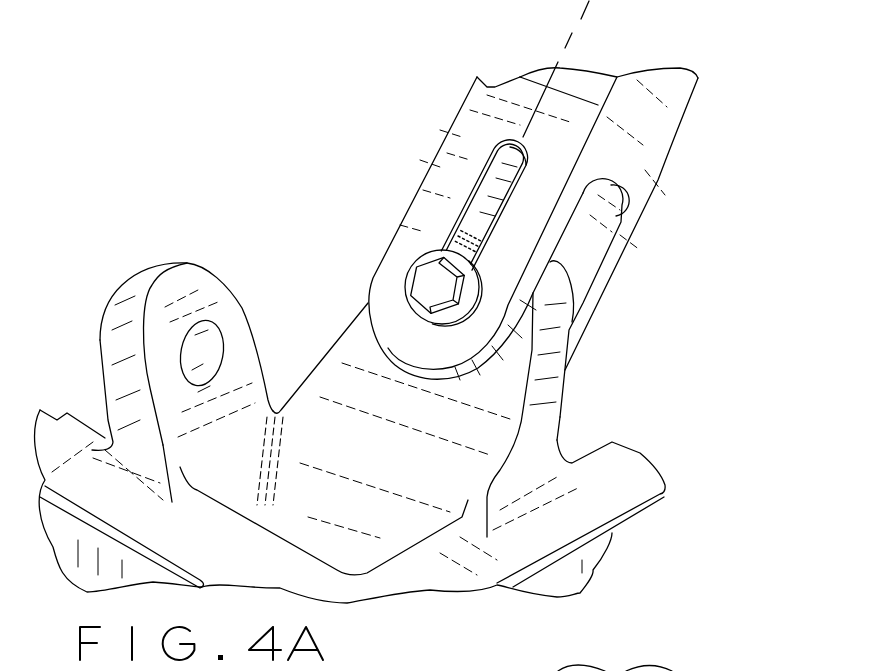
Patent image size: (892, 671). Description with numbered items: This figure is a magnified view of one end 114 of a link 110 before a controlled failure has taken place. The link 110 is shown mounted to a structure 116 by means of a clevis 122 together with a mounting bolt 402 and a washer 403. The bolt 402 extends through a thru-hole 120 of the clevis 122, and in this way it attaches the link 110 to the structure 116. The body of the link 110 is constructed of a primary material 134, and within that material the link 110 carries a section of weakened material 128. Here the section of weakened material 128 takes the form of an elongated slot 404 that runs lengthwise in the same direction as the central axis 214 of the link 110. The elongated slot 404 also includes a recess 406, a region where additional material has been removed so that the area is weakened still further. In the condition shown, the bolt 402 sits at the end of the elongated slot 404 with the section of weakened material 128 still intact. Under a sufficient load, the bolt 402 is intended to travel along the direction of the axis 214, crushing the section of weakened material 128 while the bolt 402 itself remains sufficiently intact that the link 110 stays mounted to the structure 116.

The link 110 is at (483, 210).
The end of the link 114 is at (343, 292).
The structure 116 is at (665, 458).
The thru-hole 120 is at (490, 298).
The clevis 122 is at (607, 230).
The section of weakened material 128 is at (541, 152).
The primary material 134 is at (473, 130).
The central axis 214 is at (554, 31).
The mounting bolt 402 is at (395, 252).
The washer 403 is at (432, 280).
The elongated slot 404 is at (428, 193).
The recess 406 is at (500, 168).